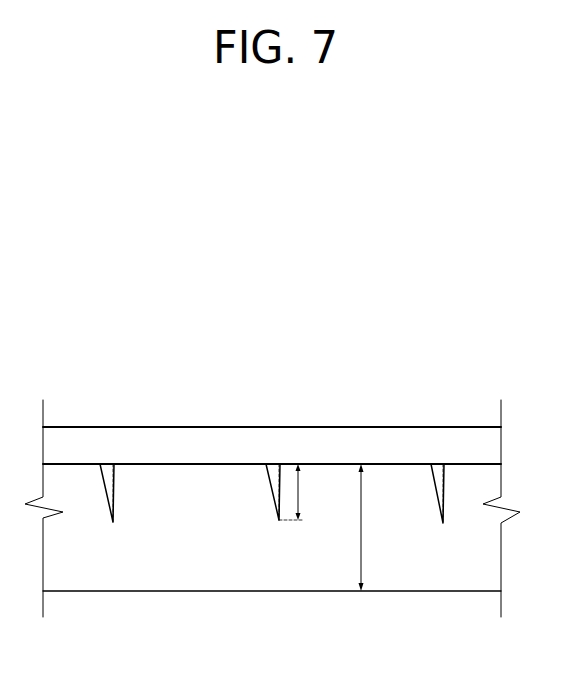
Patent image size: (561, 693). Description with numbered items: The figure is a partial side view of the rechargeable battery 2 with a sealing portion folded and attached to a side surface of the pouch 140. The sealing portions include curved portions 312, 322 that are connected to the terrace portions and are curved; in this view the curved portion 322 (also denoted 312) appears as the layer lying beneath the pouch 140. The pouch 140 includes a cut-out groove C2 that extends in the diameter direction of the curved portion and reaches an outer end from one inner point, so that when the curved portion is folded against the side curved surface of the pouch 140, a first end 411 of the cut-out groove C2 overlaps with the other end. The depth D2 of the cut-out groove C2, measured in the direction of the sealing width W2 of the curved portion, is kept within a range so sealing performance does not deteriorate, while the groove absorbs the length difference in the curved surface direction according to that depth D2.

The rechargeable battery 2 is at (228, 333).
The pouch 140 is at (385, 445).
The curved portion 322 is at (272, 618).
The curved portion 312 is at (417, 572).
The first end 411 is at (108, 496).
The cut-out groove C2 is at (105, 466).
The depth D2 is at (307, 492).
The sealing width W2 is at (381, 527).